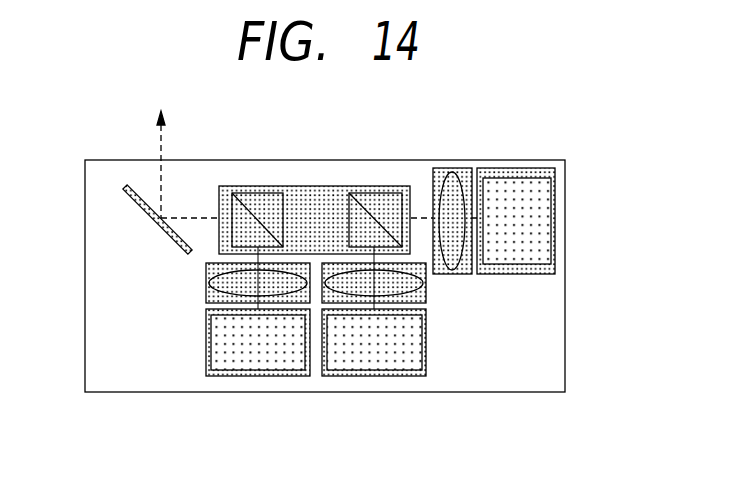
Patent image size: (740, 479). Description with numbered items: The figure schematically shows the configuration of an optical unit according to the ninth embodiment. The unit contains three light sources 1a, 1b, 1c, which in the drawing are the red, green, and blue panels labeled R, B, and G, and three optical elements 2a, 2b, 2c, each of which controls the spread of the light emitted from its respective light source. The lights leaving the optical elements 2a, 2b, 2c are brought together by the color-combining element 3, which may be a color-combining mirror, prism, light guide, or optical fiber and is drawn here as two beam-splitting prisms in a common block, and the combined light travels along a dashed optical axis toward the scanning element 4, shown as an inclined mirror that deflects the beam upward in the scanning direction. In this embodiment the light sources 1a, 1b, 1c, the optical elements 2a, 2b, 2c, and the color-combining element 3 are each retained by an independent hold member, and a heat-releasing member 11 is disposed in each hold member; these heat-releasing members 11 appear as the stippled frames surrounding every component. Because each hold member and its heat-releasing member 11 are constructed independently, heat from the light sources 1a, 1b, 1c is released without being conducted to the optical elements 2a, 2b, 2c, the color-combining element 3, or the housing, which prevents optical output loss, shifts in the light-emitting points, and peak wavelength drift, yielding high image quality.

The heat-releasing member 11 is at (234, 194).
The color-combining element 3 is at (265, 194).
The scanning element 4 is at (135, 200).
The optical element 2a is at (452, 169).
The optical element 2b is at (425, 284).
The optical element 2c is at (206, 299).
The light source 1a is at (533, 178).
The light source 1b is at (422, 350).
The light source 1c is at (216, 347).